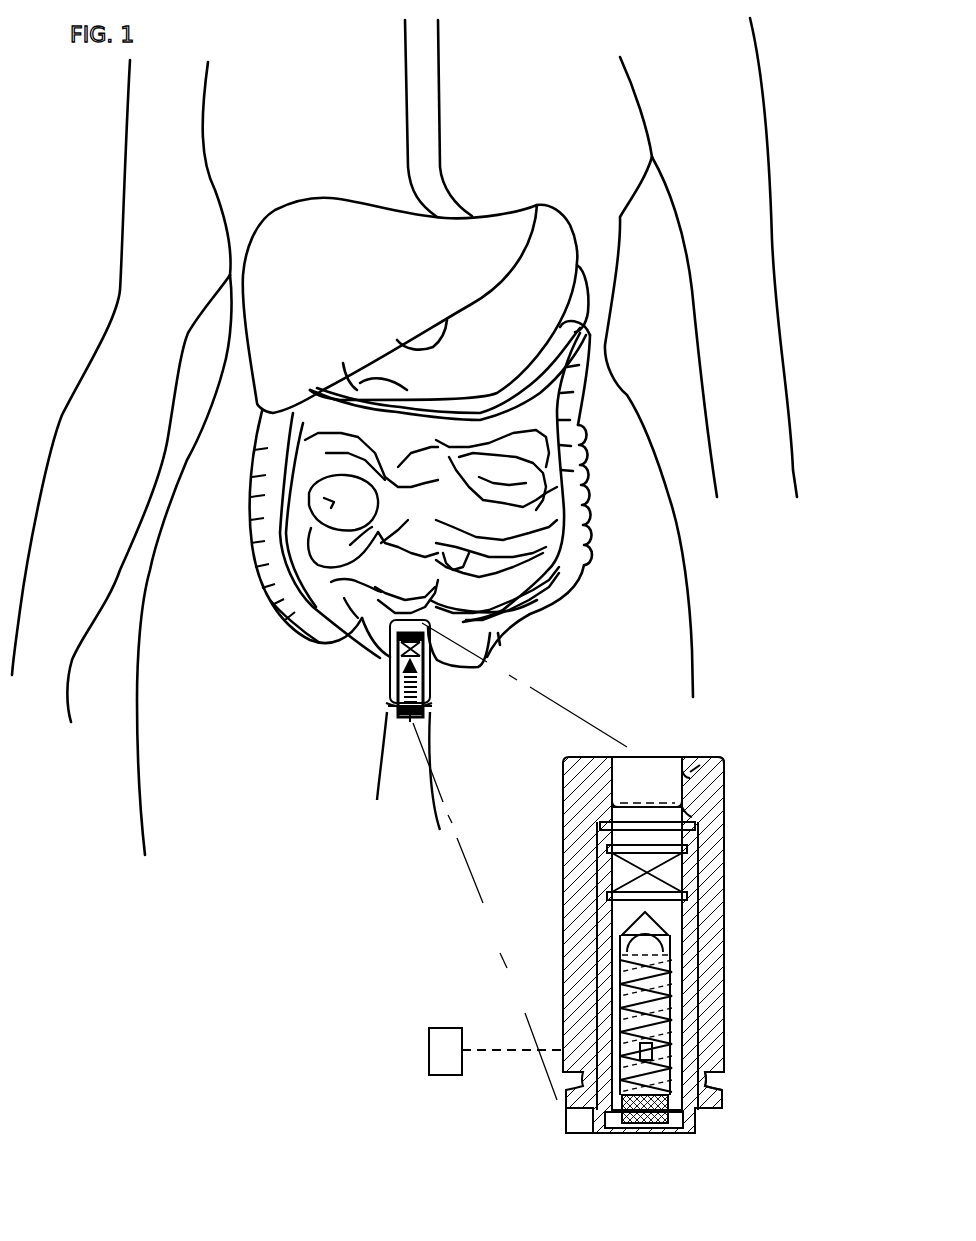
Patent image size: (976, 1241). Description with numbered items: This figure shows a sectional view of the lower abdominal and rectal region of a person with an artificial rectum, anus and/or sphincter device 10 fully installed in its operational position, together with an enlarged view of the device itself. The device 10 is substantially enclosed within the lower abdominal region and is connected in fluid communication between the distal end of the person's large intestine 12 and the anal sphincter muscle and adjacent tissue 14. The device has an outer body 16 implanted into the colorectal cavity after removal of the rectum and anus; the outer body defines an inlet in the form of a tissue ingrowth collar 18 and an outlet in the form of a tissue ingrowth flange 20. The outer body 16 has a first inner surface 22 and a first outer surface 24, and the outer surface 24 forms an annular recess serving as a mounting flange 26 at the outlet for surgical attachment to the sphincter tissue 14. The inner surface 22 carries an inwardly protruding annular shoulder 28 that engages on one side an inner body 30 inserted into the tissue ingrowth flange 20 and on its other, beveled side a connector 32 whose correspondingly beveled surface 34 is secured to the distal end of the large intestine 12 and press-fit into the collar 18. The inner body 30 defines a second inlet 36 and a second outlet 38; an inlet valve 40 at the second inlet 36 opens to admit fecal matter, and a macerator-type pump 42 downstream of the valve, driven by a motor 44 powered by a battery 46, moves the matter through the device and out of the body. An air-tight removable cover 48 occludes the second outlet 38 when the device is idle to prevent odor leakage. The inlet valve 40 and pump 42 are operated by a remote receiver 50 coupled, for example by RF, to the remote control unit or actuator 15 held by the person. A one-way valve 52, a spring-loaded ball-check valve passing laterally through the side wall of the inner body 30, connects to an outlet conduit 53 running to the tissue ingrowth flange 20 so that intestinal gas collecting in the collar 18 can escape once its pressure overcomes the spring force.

The device 10 is at (556, 786).
The large intestine 12 is at (373, 660).
The anal sphincter muscle and adjacent tissue 14 is at (392, 703).
The actuator 15 is at (451, 1075).
The outer body 16 is at (724, 779).
The tissue ingrowth collar 18 is at (641, 773).
The tissue ingrowth flange 20 is at (650, 1127).
The first inner surface 22 is at (698, 940).
The first outer surface 24 is at (724, 969).
The mounting flange 26 is at (707, 1082).
The annular shoulder 28 is at (687, 818).
The inner body 30 is at (672, 985).
The connector 32 is at (687, 777).
The beveled surface 34 is at (687, 808).
The second inlet 36 is at (637, 835).
The second outlet 38 is at (618, 1118).
The inlet valve 40 is at (680, 868).
The macerator-type pump 42 is at (672, 1007).
The motor 44 is at (597, 988).
The battery 46 is at (662, 1110).
The removable cover 48 is at (597, 1135).
The remote receiver 50 is at (660, 1047).
The one-way valve 52 is at (608, 832).
The outlet conduit 53 is at (597, 926).